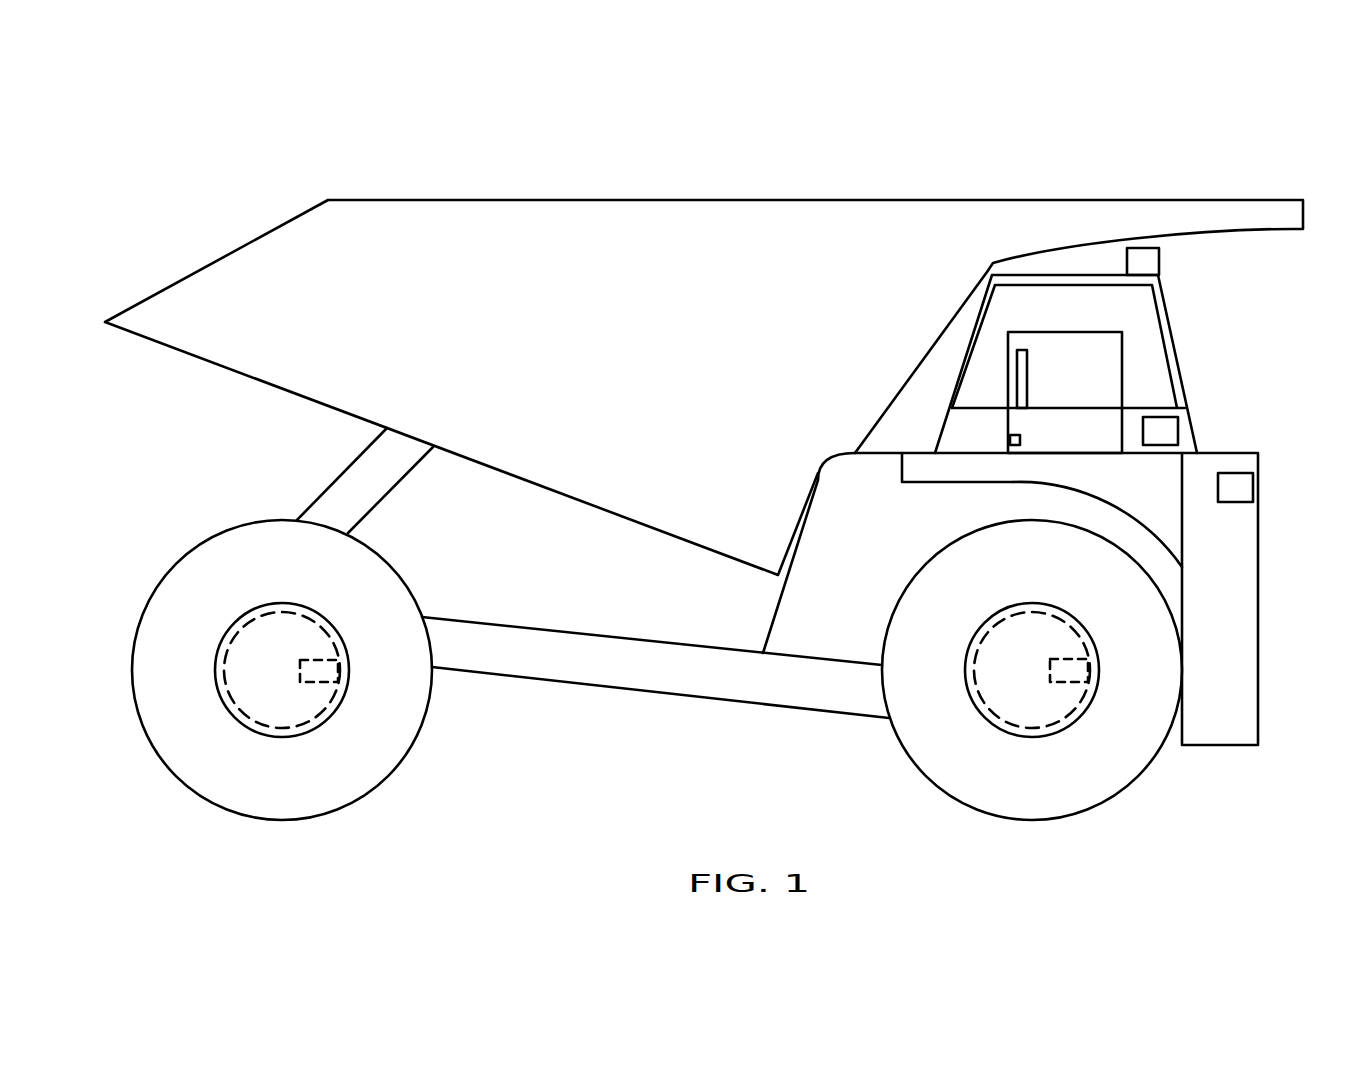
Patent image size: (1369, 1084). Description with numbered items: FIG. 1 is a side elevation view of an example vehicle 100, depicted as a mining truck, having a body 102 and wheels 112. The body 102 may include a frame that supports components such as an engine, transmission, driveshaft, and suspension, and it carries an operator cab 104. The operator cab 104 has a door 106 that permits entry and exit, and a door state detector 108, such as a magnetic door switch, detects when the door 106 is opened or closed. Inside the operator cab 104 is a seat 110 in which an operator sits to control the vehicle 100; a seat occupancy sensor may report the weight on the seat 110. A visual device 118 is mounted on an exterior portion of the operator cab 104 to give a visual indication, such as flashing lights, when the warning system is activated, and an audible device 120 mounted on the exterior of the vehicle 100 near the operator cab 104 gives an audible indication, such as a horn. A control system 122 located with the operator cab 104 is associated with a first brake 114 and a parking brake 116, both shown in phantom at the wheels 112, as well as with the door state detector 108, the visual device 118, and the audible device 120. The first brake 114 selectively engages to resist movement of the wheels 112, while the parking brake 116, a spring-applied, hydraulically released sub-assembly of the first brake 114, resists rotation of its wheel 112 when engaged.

The vehicle 100 is at (992, 151).
The body 102 is at (833, 736).
The operator cab 104 is at (1183, 370).
The door 106 is at (1122, 350).
The door state detector 108 is at (1010, 440).
The seat 110 is at (1015, 370).
The wheels 112 is at (355, 802).
The first brake 114 is at (338, 697).
The parking brake 116 is at (332, 645).
The visual device 118 is at (1159, 258).
The audible device 120 is at (1253, 483).
The control system 122 is at (1178, 428).